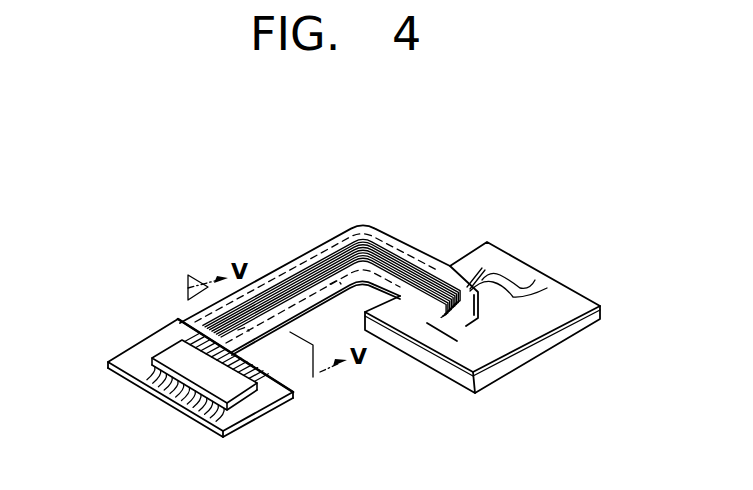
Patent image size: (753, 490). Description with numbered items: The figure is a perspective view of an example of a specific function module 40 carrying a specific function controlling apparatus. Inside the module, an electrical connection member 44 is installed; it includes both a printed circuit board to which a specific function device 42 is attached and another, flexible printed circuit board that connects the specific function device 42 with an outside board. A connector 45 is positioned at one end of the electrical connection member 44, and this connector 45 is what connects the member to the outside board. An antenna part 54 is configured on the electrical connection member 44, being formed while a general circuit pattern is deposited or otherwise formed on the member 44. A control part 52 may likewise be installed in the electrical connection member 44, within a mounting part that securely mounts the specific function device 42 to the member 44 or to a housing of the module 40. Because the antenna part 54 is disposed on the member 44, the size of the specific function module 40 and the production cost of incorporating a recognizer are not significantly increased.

The specific function module 40 is at (150, 208).
The specific function device 42 is at (597, 318).
The electrical connection member 44 is at (510, 268).
The connector 45 is at (172, 357).
The control part 52 is at (437, 270).
The antenna part 54 is at (388, 243).